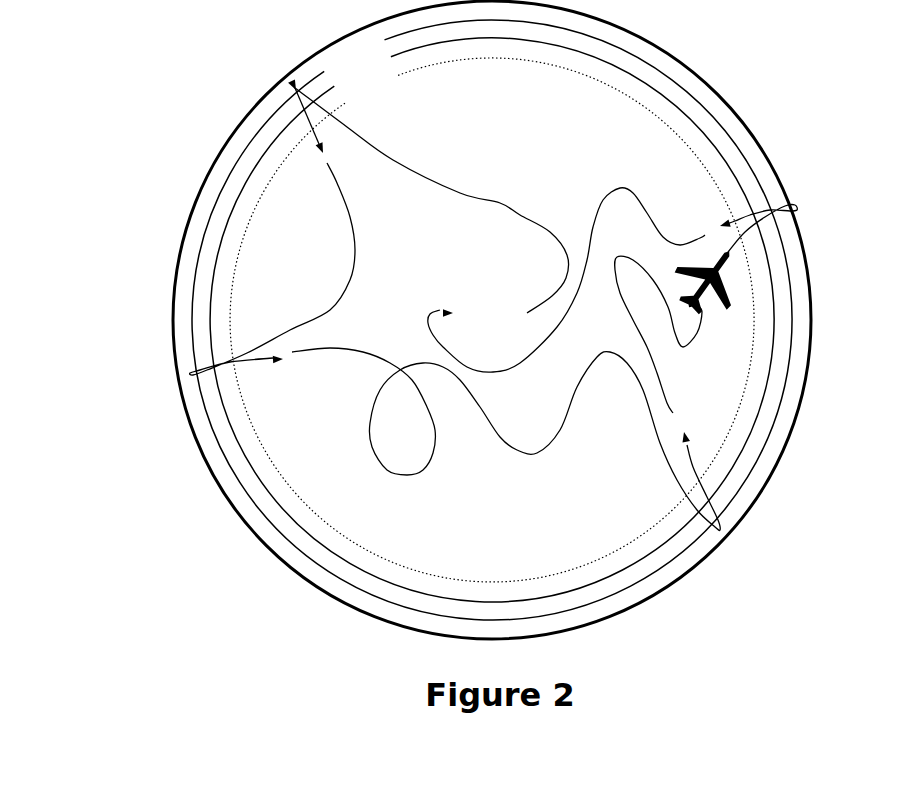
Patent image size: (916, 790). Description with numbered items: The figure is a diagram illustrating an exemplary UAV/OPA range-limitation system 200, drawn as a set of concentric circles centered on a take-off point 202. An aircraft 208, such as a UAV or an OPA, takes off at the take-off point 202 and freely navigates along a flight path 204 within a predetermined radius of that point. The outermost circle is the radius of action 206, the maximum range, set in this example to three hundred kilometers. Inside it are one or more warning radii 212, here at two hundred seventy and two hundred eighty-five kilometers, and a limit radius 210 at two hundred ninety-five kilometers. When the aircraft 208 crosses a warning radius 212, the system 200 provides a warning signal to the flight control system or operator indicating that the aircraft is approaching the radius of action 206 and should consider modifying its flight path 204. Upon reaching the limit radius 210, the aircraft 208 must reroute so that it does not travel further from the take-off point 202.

The system 200 is at (486, 324).
The take-off point 202 is at (480, 324).
The flight path 204 is at (494, 304).
The radius of action 206 is at (747, 523).
The aircraft 208 is at (709, 279).
The limit radius 210 is at (803, 332).
The warning radius 212 is at (247, 438).